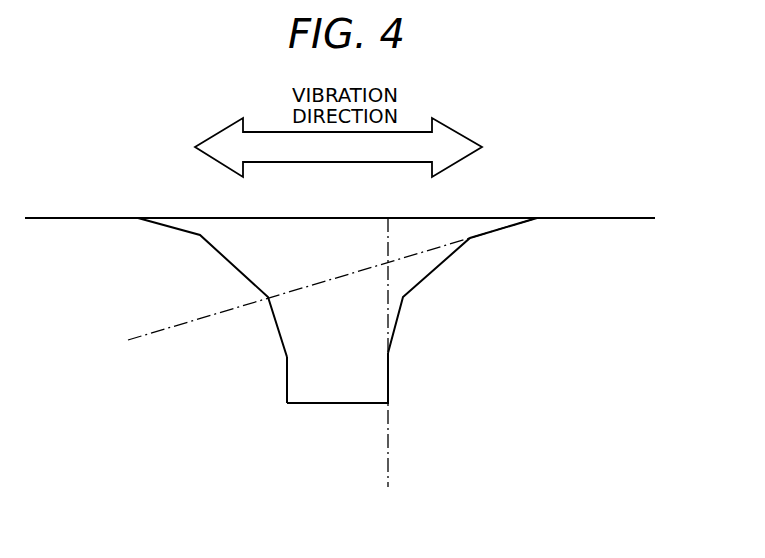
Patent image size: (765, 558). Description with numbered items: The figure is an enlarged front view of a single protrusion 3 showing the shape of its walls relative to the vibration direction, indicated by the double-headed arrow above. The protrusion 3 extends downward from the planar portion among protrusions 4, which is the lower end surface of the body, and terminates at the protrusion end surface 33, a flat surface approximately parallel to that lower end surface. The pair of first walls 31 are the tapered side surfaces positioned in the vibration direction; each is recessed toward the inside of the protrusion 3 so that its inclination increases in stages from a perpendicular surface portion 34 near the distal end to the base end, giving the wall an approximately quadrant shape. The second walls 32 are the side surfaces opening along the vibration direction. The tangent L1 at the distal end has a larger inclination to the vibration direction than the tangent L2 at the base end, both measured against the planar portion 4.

The protrusion 3 is at (339, 323).
The planar portion among protrusions 4 is at (628, 218).
The first wall 31 is at (218, 255).
The second wall 32 is at (345, 228).
The protrusion end surface 33 is at (350, 403).
The perpendicular surface portion 34 is at (298, 375).
The tangent at the distal end L1 is at (391, 366).
The tangent at the base end L2 is at (317, 286).